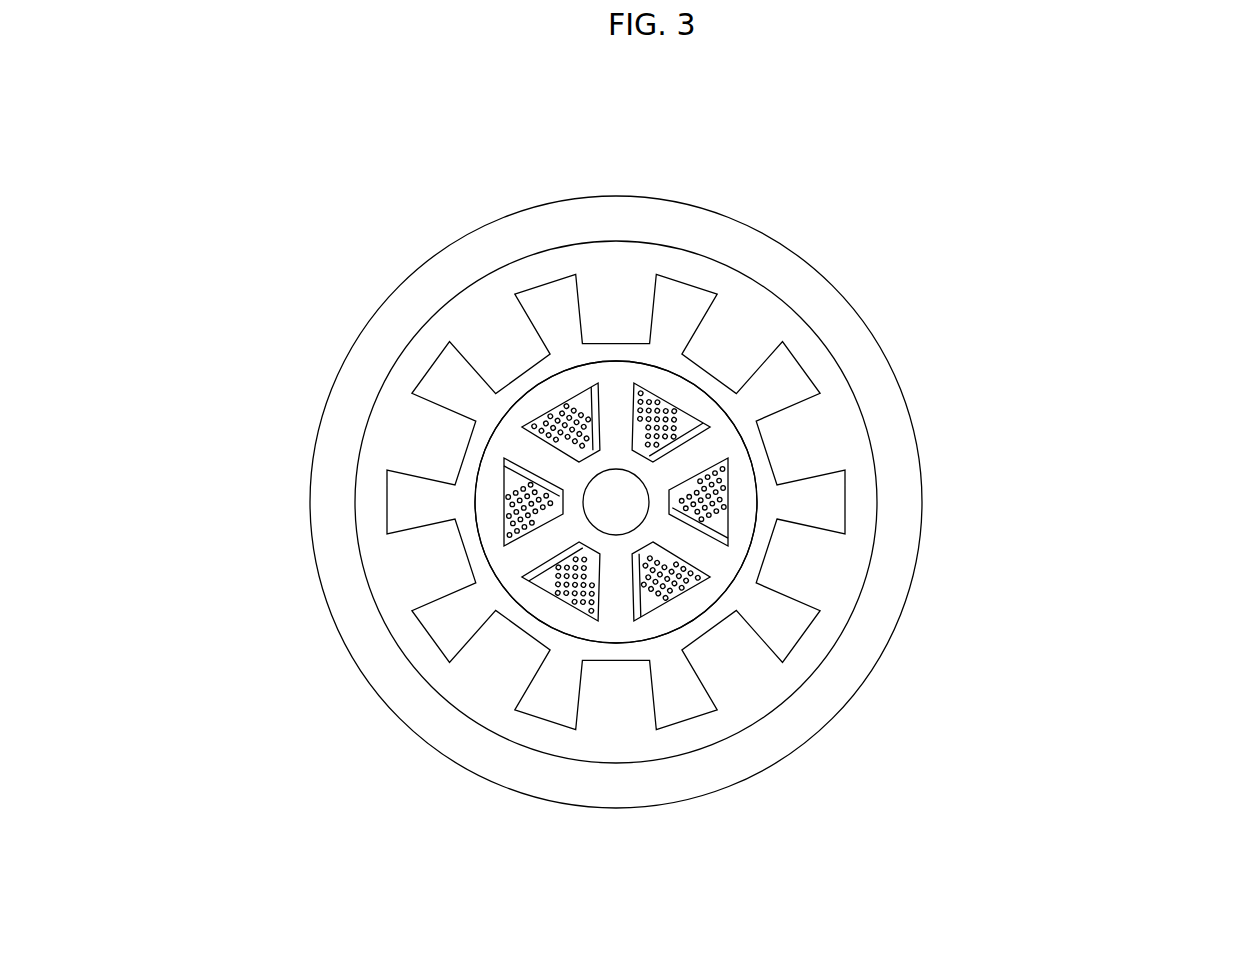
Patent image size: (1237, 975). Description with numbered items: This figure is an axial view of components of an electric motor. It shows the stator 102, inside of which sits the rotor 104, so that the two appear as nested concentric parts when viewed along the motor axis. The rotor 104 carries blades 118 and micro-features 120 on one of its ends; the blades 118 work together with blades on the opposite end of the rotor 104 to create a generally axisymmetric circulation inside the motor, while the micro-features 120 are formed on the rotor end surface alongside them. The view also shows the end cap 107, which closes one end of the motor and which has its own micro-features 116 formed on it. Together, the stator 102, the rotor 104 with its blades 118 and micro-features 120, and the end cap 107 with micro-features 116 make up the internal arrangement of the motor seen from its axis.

The stator 102 is at (400, 436).
The rotor 104 is at (523, 552).
The end cap 107 is at (420, 279).
The micro-features 116 is at (653, 363).
The blades 118 is at (640, 588).
The micro-features 120 is at (667, 587).